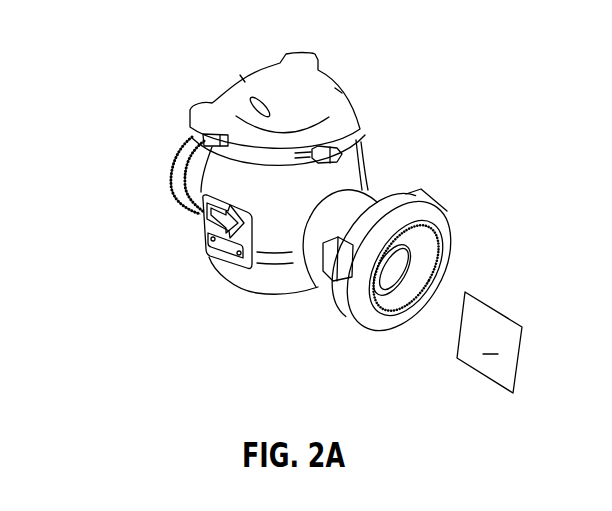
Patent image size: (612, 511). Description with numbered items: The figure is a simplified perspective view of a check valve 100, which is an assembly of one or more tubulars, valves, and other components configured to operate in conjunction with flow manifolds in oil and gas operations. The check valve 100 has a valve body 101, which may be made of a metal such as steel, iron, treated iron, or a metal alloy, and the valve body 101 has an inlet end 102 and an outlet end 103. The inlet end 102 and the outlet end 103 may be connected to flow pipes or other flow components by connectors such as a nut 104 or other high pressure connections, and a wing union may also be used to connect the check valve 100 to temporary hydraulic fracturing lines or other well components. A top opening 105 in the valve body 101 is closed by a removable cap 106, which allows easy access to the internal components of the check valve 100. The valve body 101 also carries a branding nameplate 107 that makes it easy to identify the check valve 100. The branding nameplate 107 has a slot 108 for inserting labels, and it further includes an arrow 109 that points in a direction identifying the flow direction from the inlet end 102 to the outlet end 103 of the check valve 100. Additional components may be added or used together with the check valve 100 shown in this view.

The check valve 100 is at (140, 58).
The valve body 101 is at (270, 285).
The inlet end 102 is at (170, 178).
The outlet end 103 is at (393, 297).
The nut 104 is at (443, 205).
The top opening 105 is at (343, 125).
The removable cap 106 is at (265, 80).
The branding nameplate 107 is at (224, 266).
The slot 108 is at (210, 243).
The arrow 109 is at (198, 221).